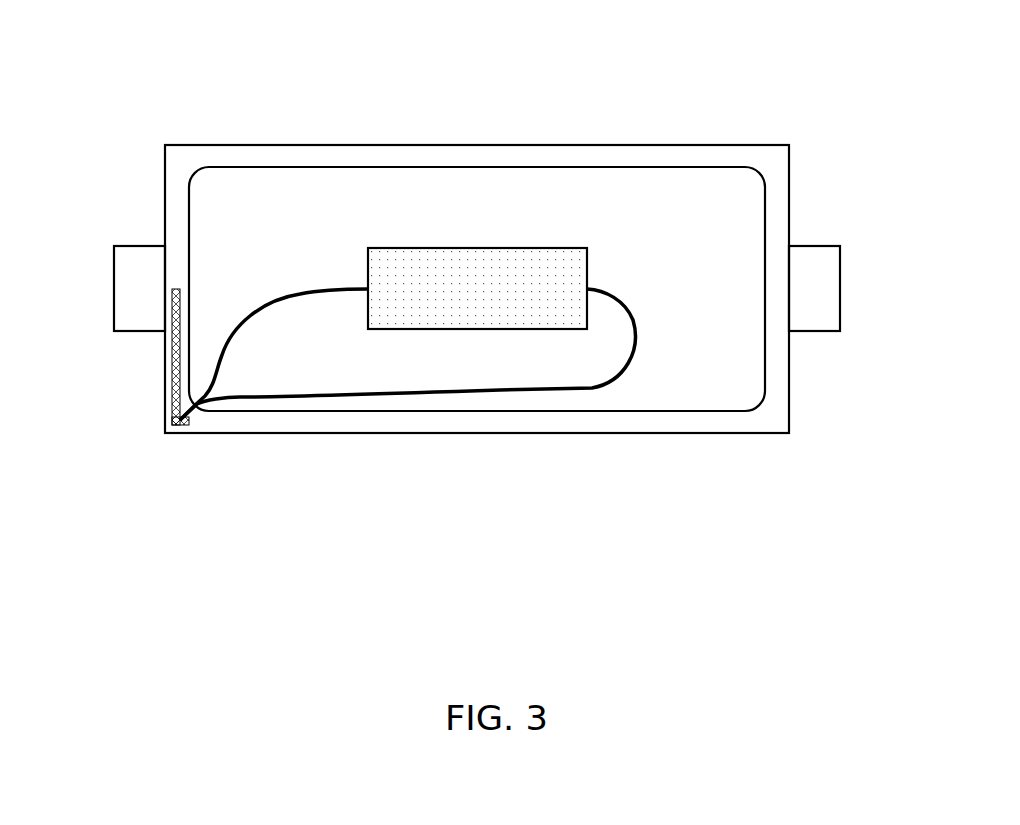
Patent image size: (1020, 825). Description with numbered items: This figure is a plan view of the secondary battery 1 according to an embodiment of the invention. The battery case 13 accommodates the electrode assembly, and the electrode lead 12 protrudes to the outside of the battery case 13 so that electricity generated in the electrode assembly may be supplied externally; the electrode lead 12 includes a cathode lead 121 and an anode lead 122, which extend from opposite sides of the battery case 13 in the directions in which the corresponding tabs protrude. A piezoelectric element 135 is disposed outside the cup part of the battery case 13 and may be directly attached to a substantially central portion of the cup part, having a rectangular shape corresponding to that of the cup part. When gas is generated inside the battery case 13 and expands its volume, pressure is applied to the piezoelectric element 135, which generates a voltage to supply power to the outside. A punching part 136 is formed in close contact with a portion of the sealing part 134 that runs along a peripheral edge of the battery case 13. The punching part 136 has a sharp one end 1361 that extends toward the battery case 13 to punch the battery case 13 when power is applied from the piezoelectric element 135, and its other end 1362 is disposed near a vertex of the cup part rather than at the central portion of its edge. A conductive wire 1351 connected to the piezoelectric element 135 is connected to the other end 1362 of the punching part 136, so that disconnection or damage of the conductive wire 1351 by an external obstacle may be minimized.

The secondary battery 1 is at (462, 72).
The electrode lead 12 is at (212, 518).
The cathode lead 121 is at (818, 318).
The anode lead 122 is at (141, 320).
The battery case 13 is at (729, 144).
The sealing part 134 is at (302, 155).
The piezoelectric element 135 is at (476, 310).
The conductive wire 1351 is at (271, 306).
The punching part 136 is at (174, 398).
The one end of the punching part 1361 is at (172, 291).
The other end of the punching part 1362 is at (181, 426).